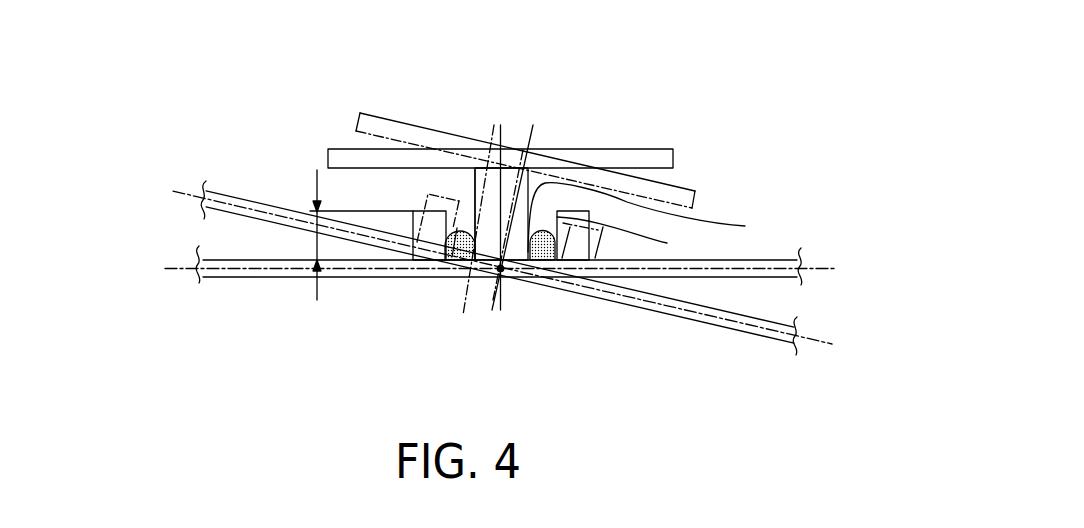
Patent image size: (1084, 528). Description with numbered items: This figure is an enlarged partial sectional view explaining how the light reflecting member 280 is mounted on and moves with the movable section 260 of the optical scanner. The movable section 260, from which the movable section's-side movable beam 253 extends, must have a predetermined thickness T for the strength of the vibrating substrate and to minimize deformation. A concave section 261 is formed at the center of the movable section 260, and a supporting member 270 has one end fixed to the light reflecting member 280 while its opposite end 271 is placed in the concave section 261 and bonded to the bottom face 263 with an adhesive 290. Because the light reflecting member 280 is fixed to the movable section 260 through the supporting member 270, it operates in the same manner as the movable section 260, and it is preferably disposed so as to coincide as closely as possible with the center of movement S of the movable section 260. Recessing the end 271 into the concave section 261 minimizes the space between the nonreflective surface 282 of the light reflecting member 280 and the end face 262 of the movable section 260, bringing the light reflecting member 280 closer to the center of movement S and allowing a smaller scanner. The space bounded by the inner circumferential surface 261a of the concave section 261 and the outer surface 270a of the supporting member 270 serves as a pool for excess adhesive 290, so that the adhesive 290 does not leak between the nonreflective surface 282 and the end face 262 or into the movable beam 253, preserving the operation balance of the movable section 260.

The movable section's-side movable beam 253 is at (245, 273).
The movable section 260 is at (433, 245).
The concave section 261 is at (472, 246).
The inner circumferential surface 261a is at (459, 247).
The end face 262 is at (572, 197).
The bottom face 263 is at (550, 276).
The supporting member 270 is at (517, 246).
The outer surface 270a is at (463, 180).
The end 271 is at (657, 217).
The light reflecting member 280 is at (647, 158).
The nonreflective surface 282 is at (638, 181).
The adhesive 290 is at (634, 236).
The center of movement S is at (507, 278).
The thickness T is at (354, 235).